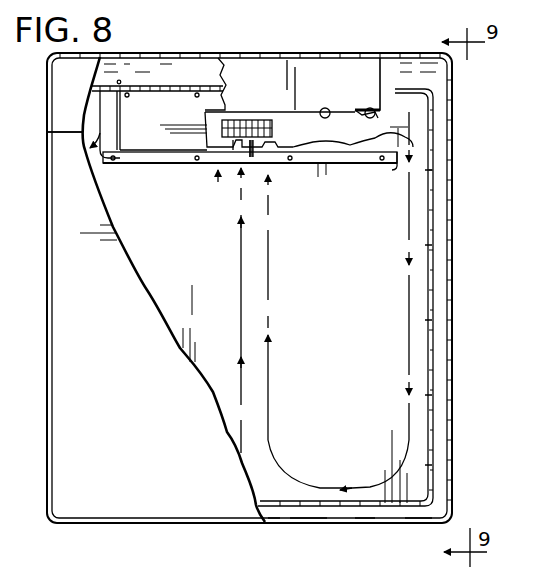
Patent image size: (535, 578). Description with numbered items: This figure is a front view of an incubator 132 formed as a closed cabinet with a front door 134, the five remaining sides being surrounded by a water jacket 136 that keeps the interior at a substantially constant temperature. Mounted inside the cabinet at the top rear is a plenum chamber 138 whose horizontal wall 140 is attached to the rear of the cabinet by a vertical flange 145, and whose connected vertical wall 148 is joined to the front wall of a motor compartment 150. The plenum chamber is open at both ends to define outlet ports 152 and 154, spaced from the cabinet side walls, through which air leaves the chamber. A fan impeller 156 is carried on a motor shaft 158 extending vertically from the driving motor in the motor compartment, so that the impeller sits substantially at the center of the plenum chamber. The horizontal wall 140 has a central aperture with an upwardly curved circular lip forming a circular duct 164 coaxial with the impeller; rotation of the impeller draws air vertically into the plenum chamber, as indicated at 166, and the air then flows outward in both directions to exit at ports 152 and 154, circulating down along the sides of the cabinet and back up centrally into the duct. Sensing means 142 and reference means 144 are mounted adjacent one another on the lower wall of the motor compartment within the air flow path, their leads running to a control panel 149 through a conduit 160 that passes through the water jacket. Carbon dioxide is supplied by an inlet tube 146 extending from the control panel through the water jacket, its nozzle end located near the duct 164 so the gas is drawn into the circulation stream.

The incubator 132 is at (456, 148).
The front door 134 is at (204, 367).
The water jacket 136 is at (440, 376).
The plenum chamber 138 is at (220, 176).
The horizontal wall 140 is at (157, 165).
The sensing means 142 is at (313, 108).
The reference means 144 is at (365, 101).
The vertical flange 145 is at (368, 162).
The carbon dioxide inlet tube 146 is at (123, 123).
The vertical wall 148 is at (137, 156).
The control panel 149 is at (63, 112).
The motor compartment 150 is at (268, 70).
The outlet port 152 is at (395, 148).
The outlet port 154 is at (100, 110).
The fan impeller 156 is at (233, 112).
The motor shaft 158 is at (248, 117).
The conduit 160 is at (120, 79).
The circular duct 164 is at (252, 160).
The air drawn vertically into plenum chamber 166 is at (290, 267).